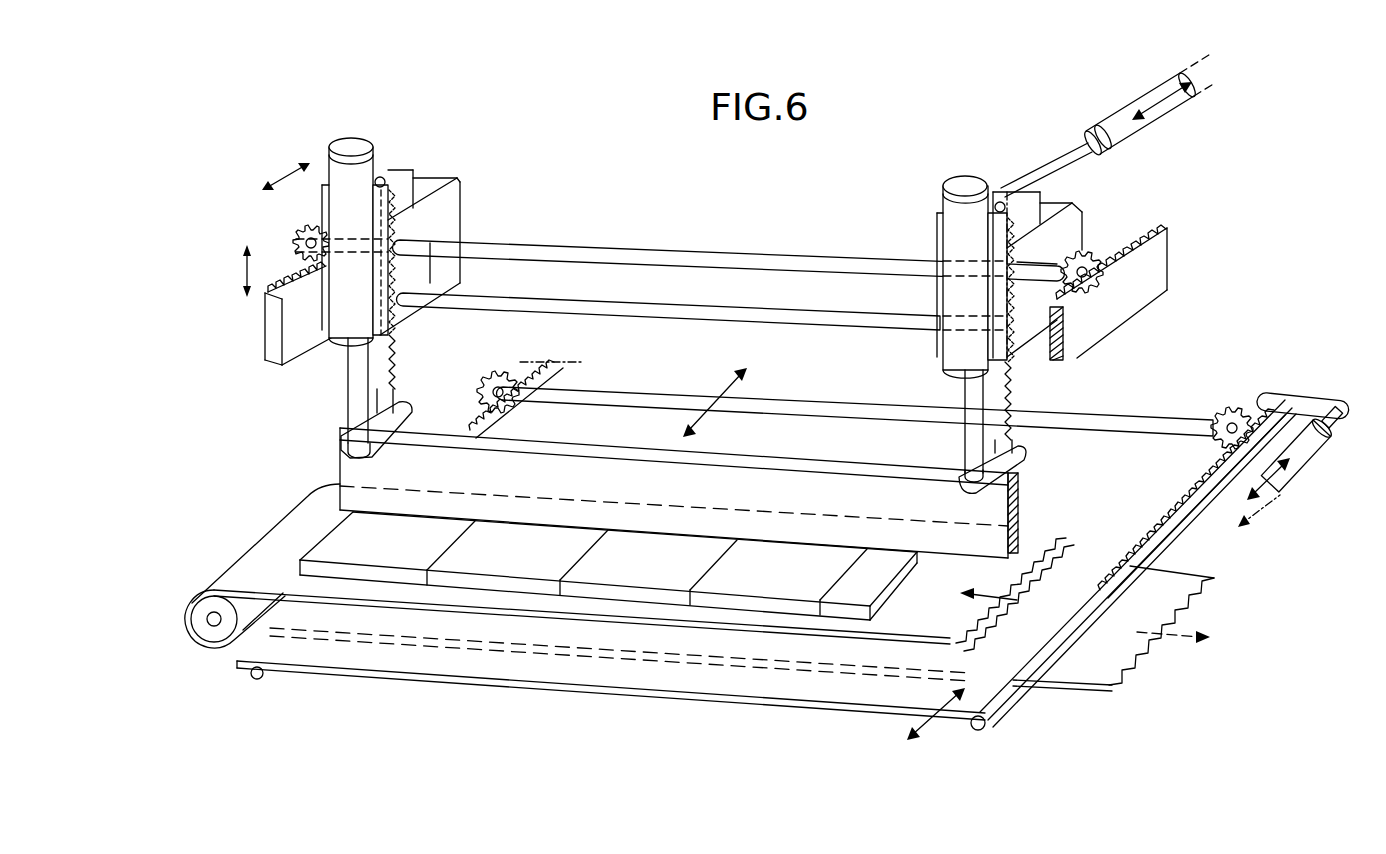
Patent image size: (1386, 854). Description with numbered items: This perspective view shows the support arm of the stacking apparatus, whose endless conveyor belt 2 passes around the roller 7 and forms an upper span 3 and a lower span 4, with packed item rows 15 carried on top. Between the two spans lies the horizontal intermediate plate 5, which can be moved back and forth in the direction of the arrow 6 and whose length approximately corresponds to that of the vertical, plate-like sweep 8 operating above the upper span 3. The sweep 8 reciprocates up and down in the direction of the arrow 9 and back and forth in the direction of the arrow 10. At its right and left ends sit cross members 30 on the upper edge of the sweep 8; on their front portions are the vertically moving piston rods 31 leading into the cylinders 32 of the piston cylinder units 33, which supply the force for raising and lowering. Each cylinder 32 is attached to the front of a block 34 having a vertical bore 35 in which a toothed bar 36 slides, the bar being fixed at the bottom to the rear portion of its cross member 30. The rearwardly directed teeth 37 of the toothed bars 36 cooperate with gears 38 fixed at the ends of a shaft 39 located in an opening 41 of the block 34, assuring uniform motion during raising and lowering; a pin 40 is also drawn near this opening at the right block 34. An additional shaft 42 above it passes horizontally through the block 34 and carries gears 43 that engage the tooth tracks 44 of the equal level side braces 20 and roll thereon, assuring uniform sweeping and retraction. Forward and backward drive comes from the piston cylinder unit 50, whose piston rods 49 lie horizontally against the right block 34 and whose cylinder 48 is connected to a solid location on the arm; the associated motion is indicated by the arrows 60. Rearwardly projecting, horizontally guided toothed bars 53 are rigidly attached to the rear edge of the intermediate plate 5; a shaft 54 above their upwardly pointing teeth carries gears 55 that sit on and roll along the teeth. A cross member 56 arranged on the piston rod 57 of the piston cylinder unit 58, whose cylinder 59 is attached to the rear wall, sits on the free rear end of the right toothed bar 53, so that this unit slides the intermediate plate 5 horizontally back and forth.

The endless conveyor belt 2 is at (222, 551).
The upper span 3 is at (1047, 535).
The lower span 4 is at (1095, 673).
The horizontal intermediate plate 5 is at (713, 683).
The arrow 6 is at (944, 716).
The roller 7 is at (213, 637).
The sweep 8 is at (745, 487).
The arrow 9 is at (245, 270).
The arrow 10 is at (1215, 113).
The packed item rows 15 is at (515, 565).
The side braces 20 is at (290, 342).
The cross members 30 is at (347, 455).
The piston rods 31 is at (350, 385).
The cylinders 32 is at (358, 180).
The piston cylinder unit 33 is at (356, 122).
The block 34 is at (455, 205).
The vertical bore 35 is at (388, 180).
The toothed bar 36 is at (396, 387).
The teeth 37 is at (397, 348).
The gears 38 is at (420, 280).
The shaft 39 is at (670, 310).
The pin 40 is at (1065, 332).
The opening 41 is at (420, 268).
The shaft 42 is at (690, 258).
The gears 43 is at (295, 237).
The tooth tracks 44 is at (267, 295).
The cylinder 48 is at (1163, 115).
The piston rods 49 is at (1058, 163).
The piston cylinder unit 50 is at (1134, 76).
The toothed bars 53 is at (262, 678).
The shaft 54 is at (792, 408).
The gears 55 is at (497, 370).
The cross member 56 is at (1300, 393).
The piston rod 57 is at (1330, 428).
The piston cylinder unit 58 is at (1285, 520).
The cylinder 59 is at (1252, 540).
The direction of movement 60 is at (715, 400).